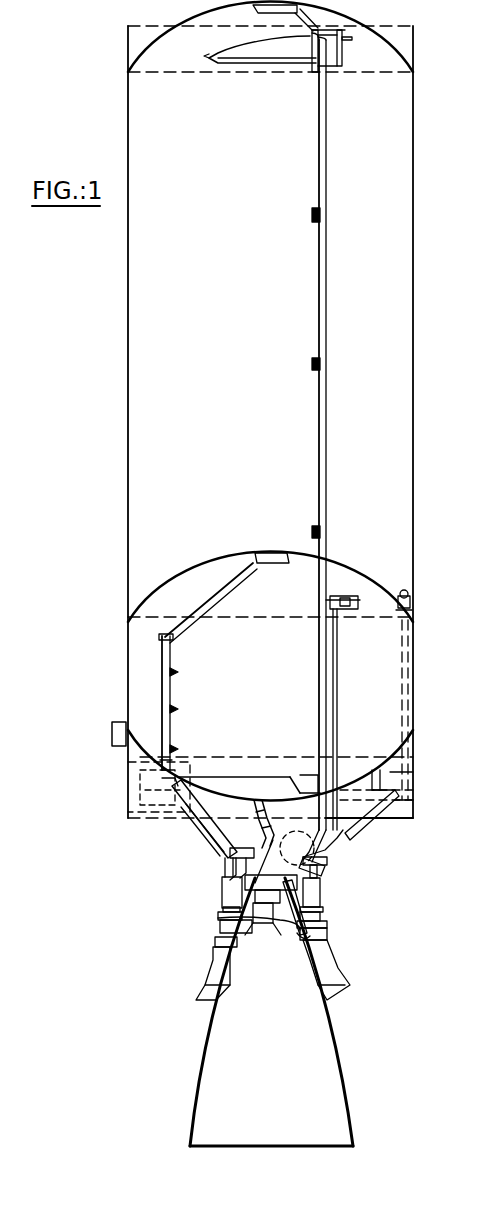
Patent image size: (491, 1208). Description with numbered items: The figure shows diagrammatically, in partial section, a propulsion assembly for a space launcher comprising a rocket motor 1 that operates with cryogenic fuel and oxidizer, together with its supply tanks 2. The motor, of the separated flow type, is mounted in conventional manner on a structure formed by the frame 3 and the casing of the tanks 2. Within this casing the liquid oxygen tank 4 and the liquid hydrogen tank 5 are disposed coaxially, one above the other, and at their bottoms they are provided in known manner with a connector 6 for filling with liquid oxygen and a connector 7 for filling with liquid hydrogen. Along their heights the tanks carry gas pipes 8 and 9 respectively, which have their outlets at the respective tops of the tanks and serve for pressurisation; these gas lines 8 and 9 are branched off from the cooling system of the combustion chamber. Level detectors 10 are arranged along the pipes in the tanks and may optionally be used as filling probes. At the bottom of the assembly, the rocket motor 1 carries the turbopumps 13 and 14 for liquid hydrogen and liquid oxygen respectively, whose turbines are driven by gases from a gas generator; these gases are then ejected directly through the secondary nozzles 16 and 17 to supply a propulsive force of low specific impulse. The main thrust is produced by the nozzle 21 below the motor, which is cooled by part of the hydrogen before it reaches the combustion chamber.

The rocket motor 1 is at (417, 955).
The supply tanks 2 is at (414, 347).
The frame 3 is at (193, 828).
The liquid oxygen tank 4 is at (290, 677).
The liquid hydrogen tank 5 is at (224, 331).
The connector 6 is at (226, 846).
The connector 7 is at (358, 602).
The gas pipe 8 is at (162, 690).
The gas pipe 9 is at (323, 288).
The level detectors 10 is at (312, 214).
The turbopump 13 is at (326, 945).
The turbopump 14 is at (218, 940).
The secondary nozzle 16 is at (332, 986).
The secondary nozzle 17 is at (208, 973).
The nozzle 21 is at (203, 1072).